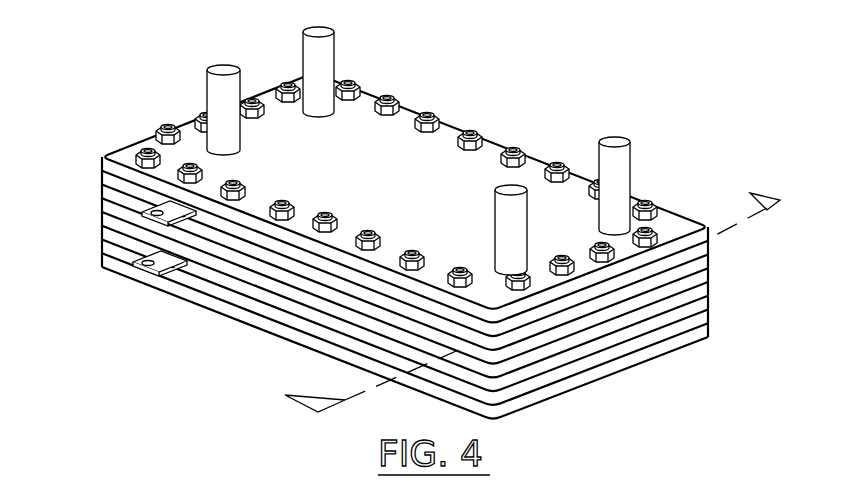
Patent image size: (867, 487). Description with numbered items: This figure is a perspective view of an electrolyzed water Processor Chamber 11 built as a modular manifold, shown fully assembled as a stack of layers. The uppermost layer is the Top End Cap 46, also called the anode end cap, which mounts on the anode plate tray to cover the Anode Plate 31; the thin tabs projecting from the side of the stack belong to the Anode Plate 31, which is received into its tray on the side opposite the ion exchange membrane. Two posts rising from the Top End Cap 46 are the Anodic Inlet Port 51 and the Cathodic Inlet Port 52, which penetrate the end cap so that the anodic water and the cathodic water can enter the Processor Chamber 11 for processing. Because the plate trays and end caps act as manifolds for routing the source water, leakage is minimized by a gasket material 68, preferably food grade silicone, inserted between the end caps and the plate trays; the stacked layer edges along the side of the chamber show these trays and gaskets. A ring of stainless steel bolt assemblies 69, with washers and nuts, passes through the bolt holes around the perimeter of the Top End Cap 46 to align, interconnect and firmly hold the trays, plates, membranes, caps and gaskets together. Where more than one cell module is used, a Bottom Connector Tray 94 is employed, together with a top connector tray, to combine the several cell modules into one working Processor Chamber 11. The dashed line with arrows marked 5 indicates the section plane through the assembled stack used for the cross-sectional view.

The processor chamber 11 is at (381, 221).
The top end cap 46 is at (386, 181).
The gasket material 68 is at (234, 303).
The anode plate 31 is at (150, 212).
The bolt assemblies 69 is at (387, 93).
The anodic inlet port 51 is at (220, 98).
The cathodic inlet port 52 is at (318, 50).
The bottom connector tray 94 is at (632, 158).
The section line 5- 5 is at (525, 293).